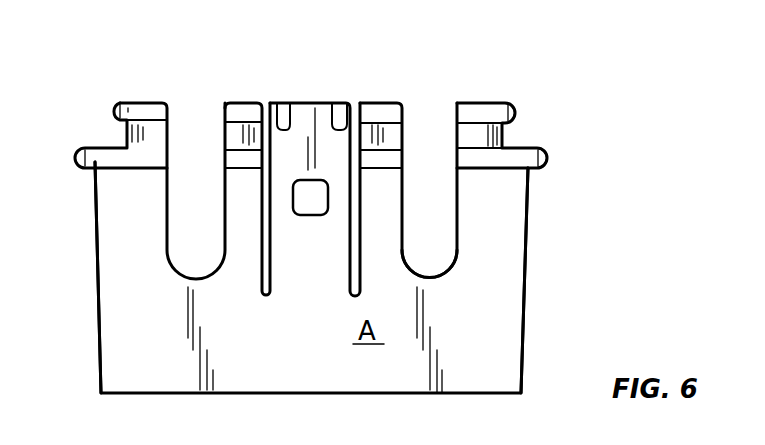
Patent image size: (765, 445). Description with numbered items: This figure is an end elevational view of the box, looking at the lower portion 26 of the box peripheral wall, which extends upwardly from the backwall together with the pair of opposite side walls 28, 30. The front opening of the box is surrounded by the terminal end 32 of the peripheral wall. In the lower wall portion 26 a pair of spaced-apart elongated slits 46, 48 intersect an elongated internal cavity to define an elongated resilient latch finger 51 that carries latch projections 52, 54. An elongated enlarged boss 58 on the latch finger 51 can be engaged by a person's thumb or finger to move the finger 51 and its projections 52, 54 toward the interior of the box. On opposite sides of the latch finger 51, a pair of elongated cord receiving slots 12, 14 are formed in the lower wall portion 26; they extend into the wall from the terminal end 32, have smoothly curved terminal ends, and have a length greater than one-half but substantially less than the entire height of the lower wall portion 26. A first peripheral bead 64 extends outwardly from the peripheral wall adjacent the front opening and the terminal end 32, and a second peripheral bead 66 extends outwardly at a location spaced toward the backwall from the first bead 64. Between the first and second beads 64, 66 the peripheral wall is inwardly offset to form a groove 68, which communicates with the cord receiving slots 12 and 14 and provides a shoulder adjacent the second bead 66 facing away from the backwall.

The cord receiving slot 12 is at (172, 205).
The cord receiving slot 14 is at (447, 228).
The lower portion 26 is at (135, 333).
The side wall 28 is at (97, 280).
The side wall 30 is at (528, 262).
The terminal end 32 is at (471, 103).
The elongated slit 46 is at (268, 102).
The elongated slit 48 is at (360, 103).
The latch finger 51 is at (310, 105).
The latch projection 52 is at (283, 103).
The latch projection 54 is at (337, 105).
The enlarged boss 58 is at (310, 215).
The first peripheral bead 64 is at (512, 113).
The second peripheral bead 66 is at (548, 165).
The groove 68 is at (500, 140).